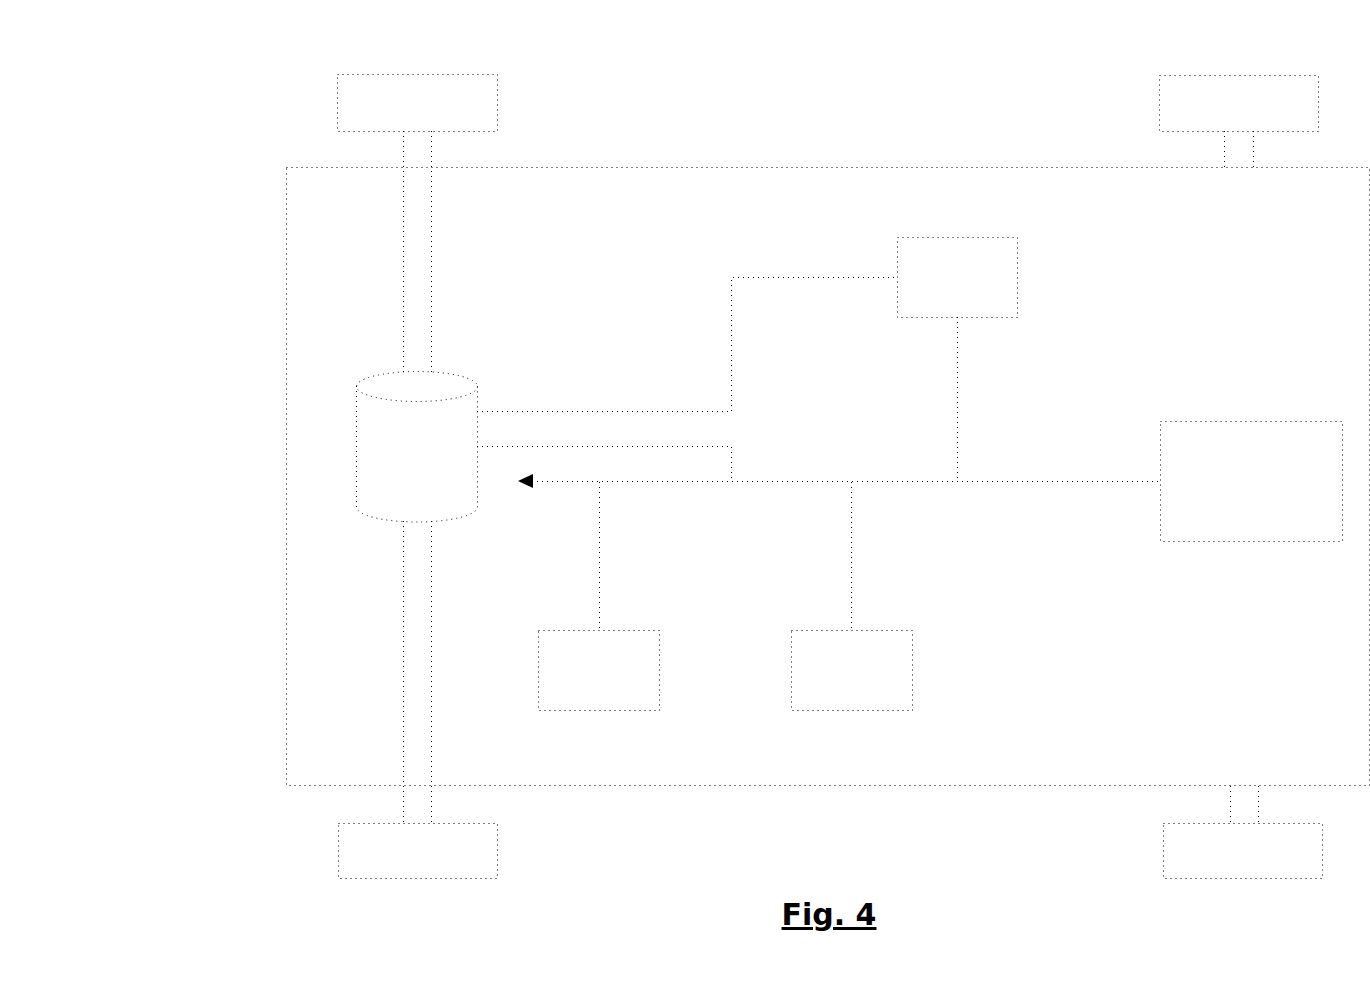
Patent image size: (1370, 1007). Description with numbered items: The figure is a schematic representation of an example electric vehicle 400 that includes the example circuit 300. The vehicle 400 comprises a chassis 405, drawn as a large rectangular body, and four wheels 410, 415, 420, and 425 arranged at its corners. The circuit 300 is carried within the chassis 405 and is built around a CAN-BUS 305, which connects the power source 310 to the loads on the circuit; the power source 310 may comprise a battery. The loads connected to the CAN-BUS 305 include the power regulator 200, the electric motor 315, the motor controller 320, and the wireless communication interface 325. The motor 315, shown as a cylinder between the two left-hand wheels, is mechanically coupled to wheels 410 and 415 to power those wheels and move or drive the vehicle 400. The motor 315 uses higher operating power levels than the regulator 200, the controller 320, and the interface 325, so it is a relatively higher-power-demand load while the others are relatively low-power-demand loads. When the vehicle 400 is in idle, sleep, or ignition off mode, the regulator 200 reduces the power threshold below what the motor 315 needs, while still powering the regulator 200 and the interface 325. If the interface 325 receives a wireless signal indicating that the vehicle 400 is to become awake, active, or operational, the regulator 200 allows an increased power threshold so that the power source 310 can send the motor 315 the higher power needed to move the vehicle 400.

The electric vehicle 400 is at (317, 45).
The chassis 405 is at (943, 785).
The wheel 410 is at (497, 103).
The wheel 415 is at (497, 850).
The wheel 420 is at (1159, 100).
The wheel 425 is at (1163, 851).
The circuit 300 is at (1101, 314).
The CAN-BUS 305 is at (1060, 481).
The power source 310 is at (1252, 482).
The electric motor 315 is at (627, 400).
The motor controller 320 is at (958, 360).
The wireless communication interface 325 is at (599, 596).
The power regulator 200 is at (852, 596).